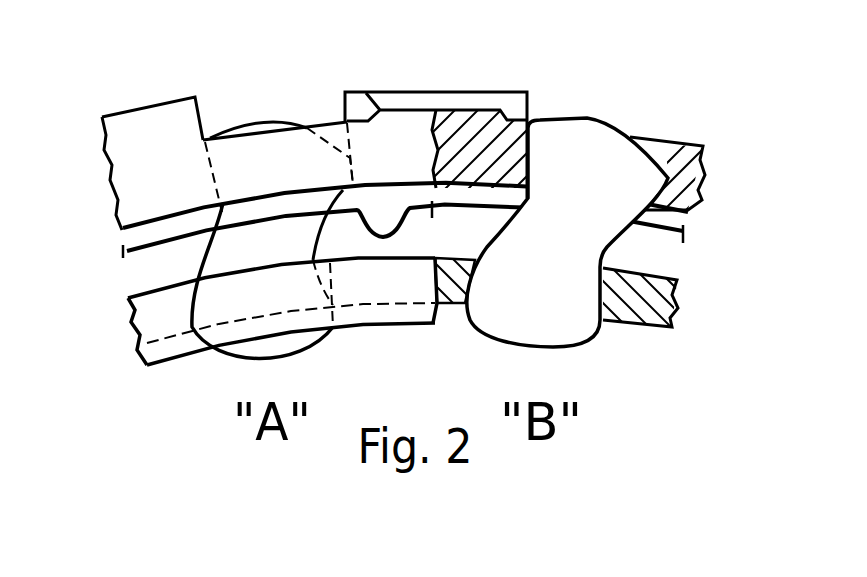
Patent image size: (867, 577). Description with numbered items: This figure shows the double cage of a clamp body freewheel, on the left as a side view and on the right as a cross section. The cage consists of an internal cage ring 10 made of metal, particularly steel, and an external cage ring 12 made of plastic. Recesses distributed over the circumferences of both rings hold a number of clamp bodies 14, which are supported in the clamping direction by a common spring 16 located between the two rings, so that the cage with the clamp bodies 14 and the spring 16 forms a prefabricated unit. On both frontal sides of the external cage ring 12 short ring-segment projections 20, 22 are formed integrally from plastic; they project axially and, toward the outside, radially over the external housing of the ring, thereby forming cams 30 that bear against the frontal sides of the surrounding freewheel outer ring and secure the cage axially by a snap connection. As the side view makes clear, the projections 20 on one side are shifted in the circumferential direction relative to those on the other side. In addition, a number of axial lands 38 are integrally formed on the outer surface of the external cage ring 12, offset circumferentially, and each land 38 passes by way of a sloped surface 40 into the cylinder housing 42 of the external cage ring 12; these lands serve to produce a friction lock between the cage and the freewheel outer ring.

The internal cage ring 10 is at (650, 306).
The external cage ring 12 is at (677, 172).
The clamp body 14 is at (243, 128).
The spring 16 is at (140, 251).
The projection 20 is at (463, 100).
The projection 22 is at (132, 163).
The cam 30 is at (137, 115).
The axial land 38 is at (428, 110).
The sloped surface 40 is at (366, 95).
The cylinder housing 42 is at (315, 124).